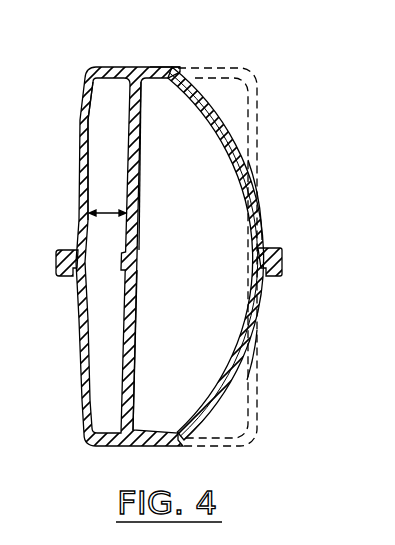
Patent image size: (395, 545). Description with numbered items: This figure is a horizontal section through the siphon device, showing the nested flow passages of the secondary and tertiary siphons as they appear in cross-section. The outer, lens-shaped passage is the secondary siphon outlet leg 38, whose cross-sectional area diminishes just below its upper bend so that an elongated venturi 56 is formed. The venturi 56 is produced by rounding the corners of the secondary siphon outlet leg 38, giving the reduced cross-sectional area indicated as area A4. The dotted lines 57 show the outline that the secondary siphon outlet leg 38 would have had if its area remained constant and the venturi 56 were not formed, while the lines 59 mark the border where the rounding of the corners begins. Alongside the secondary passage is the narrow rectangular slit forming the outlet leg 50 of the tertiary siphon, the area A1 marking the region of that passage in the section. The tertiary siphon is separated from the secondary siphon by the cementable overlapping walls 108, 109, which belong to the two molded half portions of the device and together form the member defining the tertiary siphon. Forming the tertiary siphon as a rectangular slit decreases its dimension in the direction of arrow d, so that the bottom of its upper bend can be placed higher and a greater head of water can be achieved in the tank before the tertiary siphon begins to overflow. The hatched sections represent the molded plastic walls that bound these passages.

The outlet leg 50 is at (96, 356).
The first chamber region A1 is at (108, 97).
The overlapping wall 108 is at (140, 186).
The overlapping wall 109 is at (134, 316).
The secondary siphon outlet leg 38 is at (224, 198).
The venturi 56 is at (234, 132).
The reduced area A4 is at (228, 318).
The lines 59 is at (170, 68).
The dotted lines 57 is at (238, 63).
The arrow d is at (104, 213).